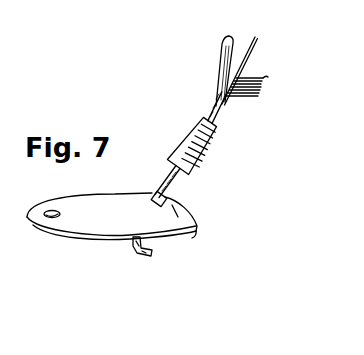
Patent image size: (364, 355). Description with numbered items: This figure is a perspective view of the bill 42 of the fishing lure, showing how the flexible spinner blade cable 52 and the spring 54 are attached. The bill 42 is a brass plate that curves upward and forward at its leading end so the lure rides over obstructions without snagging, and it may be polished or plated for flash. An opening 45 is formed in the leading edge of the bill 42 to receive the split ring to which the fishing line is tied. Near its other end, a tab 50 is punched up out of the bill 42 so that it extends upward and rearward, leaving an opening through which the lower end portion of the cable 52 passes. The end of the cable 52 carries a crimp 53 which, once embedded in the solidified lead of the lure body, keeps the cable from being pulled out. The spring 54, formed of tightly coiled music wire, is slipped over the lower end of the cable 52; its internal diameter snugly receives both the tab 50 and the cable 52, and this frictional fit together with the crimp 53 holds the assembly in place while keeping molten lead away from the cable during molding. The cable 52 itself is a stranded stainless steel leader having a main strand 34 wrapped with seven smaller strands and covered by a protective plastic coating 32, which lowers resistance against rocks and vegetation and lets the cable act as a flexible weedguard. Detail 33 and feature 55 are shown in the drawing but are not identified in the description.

The protective plastic coating 32 is at (232, 41).
The braided shield 33 is at (267, 80).
The main strand 34 is at (257, 42).
The bill 42 is at (112, 226).
The opening 45 is at (47, 219).
The tab 50 is at (152, 197).
The flexible spinner blade cable 52 is at (216, 121).
The crimp 53 is at (140, 255).
The spring 54 is at (203, 157).
The tab 55 is at (192, 236).